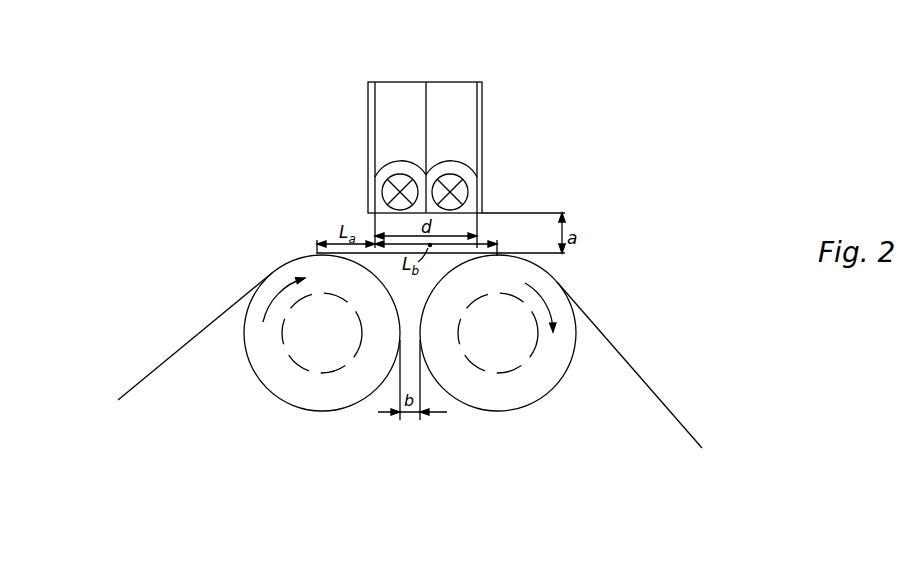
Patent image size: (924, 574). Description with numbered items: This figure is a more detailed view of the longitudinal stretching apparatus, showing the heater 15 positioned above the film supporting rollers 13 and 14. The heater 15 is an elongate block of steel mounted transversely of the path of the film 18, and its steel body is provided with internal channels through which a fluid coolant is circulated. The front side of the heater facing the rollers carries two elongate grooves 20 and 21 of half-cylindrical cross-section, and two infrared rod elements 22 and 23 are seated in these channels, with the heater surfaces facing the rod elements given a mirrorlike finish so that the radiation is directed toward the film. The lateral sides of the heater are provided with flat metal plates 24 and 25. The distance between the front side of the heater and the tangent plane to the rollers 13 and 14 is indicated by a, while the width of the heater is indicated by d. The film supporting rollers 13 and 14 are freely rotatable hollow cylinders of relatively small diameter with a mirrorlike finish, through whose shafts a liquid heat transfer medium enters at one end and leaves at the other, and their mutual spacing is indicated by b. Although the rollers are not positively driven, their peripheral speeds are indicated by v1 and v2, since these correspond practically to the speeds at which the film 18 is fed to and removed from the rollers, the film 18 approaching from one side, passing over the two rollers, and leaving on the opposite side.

The film supporting roller 13 is at (310, 396).
The film supporting roller 14 is at (520, 396).
The heater 15 is at (440, 77).
The film 18 is at (183, 345).
The elongate groove 20 is at (385, 170).
The elongate groove 21 is at (462, 170).
The infrared rod element 22 is at (388, 192).
The infrared rod element 23 is at (461, 192).
The flat metal plate 24 is at (374, 106).
The flat metal plate 25 is at (478, 116).